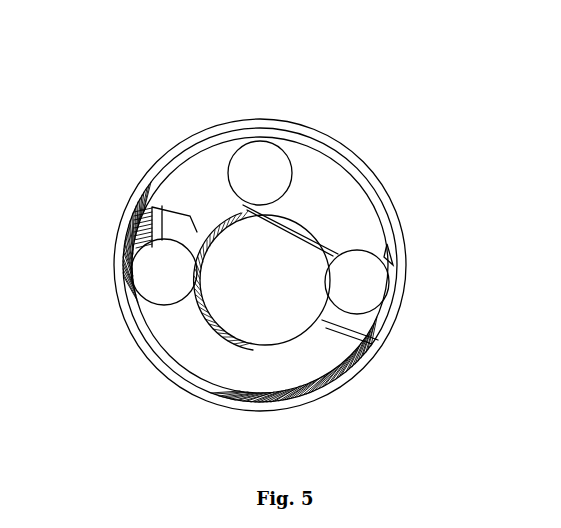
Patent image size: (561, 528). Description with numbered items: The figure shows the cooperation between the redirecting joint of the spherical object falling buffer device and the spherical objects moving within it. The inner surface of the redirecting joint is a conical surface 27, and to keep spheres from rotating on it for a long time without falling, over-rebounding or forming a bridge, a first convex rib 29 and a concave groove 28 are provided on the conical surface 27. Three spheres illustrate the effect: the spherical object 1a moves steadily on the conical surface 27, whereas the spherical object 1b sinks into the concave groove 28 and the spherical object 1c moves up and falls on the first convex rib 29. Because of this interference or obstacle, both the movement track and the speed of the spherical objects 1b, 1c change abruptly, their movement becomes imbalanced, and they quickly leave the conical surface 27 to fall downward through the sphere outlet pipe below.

The spherical object 1a is at (255, 177).
The spherical object 1b is at (350, 270).
The spherical object 1c is at (143, 272).
The conical surface 27 is at (212, 193).
The concave groove 28 is at (335, 317).
The first convex rib 29 is at (182, 223).